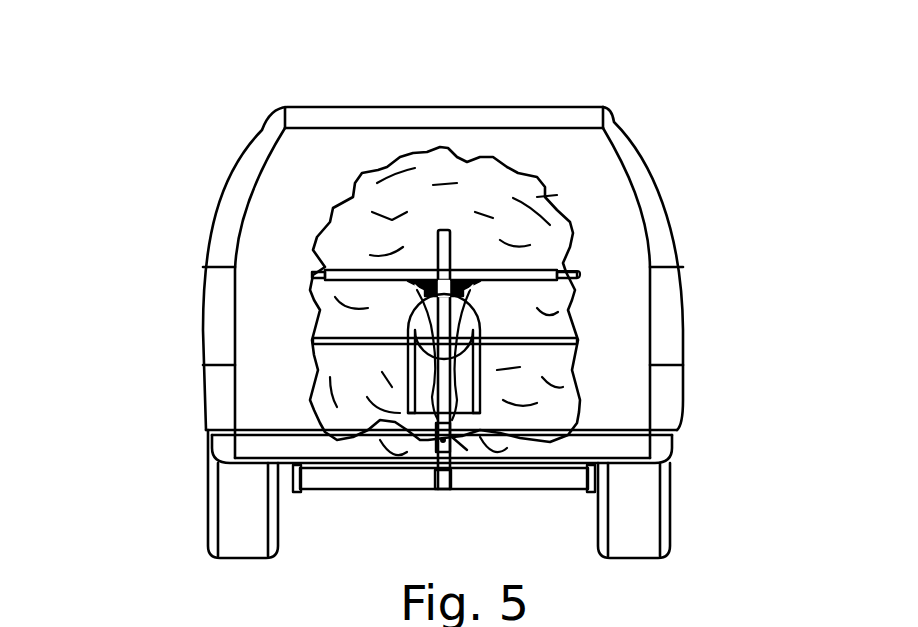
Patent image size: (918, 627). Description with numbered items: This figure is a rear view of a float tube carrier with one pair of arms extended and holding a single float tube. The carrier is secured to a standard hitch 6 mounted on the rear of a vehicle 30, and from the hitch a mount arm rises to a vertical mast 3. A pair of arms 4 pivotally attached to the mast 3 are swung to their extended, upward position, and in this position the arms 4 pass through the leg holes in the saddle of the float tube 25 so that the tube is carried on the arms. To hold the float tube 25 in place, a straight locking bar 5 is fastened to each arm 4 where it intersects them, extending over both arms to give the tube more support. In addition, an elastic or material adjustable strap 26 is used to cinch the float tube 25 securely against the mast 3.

The vehicle 30 is at (227, 175).
The float tube 25 is at (537, 197).
The mast 3 is at (450, 250).
The locking bar 5 is at (313, 276).
The arm 4 is at (476, 380).
The adjustable strap 26 is at (557, 281).
The hitch 6 is at (433, 482).